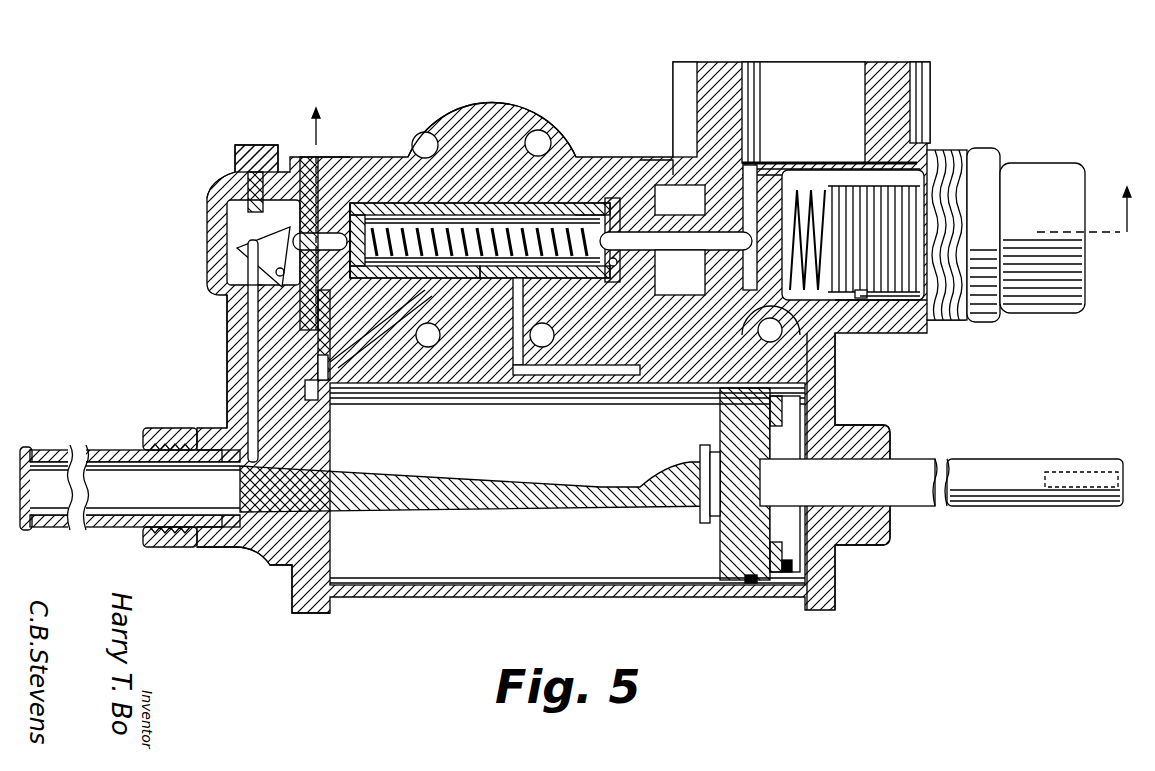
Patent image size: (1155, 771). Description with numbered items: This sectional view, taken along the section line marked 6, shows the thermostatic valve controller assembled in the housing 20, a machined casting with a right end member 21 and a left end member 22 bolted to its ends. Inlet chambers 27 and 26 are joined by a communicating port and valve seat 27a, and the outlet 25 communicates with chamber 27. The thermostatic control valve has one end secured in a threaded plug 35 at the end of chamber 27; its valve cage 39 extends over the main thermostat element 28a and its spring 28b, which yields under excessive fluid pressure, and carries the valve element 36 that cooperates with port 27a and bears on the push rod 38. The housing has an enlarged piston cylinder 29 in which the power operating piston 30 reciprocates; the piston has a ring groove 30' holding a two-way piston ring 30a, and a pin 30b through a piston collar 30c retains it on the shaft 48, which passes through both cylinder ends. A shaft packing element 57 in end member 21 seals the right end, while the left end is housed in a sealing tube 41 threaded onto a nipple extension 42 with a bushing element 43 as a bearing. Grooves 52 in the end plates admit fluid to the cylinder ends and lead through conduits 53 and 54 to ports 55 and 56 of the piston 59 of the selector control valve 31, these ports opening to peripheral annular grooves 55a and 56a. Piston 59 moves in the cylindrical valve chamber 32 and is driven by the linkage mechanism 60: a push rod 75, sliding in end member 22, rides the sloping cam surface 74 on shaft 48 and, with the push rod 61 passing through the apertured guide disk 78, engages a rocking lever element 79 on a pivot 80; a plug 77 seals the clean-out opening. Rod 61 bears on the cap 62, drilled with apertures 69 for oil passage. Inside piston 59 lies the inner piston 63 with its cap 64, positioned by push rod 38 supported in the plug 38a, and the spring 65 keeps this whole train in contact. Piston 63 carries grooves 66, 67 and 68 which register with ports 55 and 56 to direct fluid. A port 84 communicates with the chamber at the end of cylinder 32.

The section line 6- 6 is at (723, 153).
The housing 20 is at (462, 175).
The right end member 21 is at (838, 405).
The left end member 22 is at (228, 335).
The outlet 25 is at (850, 72).
The chamber 26 is at (230, 220).
The chamber 27 is at (905, 305).
The valve port and seat 27a is at (766, 168).
The main thermostat element 28a is at (905, 228).
The spring 28b is at (812, 188).
The piston cylinder 29 is at (405, 600).
The power operating piston 30 is at (733, 484).
The two-way piston ring 30a is at (752, 586).
The pin 30b is at (712, 520).
The piston collar 30c is at (698, 455).
The ring groove 30' is at (716, 573).
The selector control valve 31 is at (362, 203).
The cylindrical valve chamber 32 is at (338, 157).
The threaded plug 35 is at (952, 185).
The valve element 36 is at (756, 324).
The push rod 38 is at (705, 250).
The plug 38a is at (680, 200).
The valve cage 39 is at (895, 300).
The sealing tube 41 is at (108, 450).
The nipple extension 42 is at (207, 440).
The bushing element 43 is at (283, 513).
The piston shaft 48 is at (995, 465).
The grooves 52 is at (305, 392).
The conduit 53 is at (318, 362).
The conduit 54 is at (625, 396).
The port 55 is at (445, 282).
The peripheral annular groove 55a is at (440, 203).
The port 56 is at (540, 282).
The peripheral annular groove 56a is at (530, 203).
The shaft packing element 57 is at (880, 440).
The piston 59 is at (377, 325).
The linkage mechanism 60 is at (250, 248).
The push rod 61 is at (302, 335).
The cap 62 is at (356, 219).
The inner piston 63 is at (556, 215).
The cap 64 is at (612, 198).
The spring 65 is at (372, 215).
The outer groove 66 is at (490, 225).
The outer groove 67 is at (545, 175).
The outer groove 68 is at (585, 203).
The apertures 69 is at (379, 332).
The sloping cam surface 74 is at (483, 478).
The push rod 75 is at (248, 350).
The plug 77 is at (256, 145).
The apertured guide disk 78 is at (303, 160).
The rocking lever element 79 is at (243, 253).
The pivot 80 is at (247, 290).
The port 84 is at (613, 268).